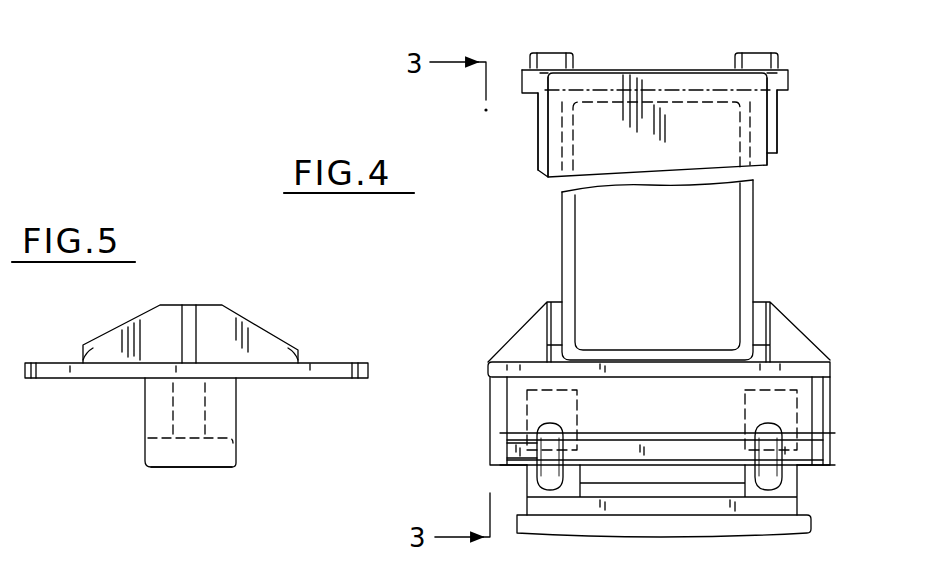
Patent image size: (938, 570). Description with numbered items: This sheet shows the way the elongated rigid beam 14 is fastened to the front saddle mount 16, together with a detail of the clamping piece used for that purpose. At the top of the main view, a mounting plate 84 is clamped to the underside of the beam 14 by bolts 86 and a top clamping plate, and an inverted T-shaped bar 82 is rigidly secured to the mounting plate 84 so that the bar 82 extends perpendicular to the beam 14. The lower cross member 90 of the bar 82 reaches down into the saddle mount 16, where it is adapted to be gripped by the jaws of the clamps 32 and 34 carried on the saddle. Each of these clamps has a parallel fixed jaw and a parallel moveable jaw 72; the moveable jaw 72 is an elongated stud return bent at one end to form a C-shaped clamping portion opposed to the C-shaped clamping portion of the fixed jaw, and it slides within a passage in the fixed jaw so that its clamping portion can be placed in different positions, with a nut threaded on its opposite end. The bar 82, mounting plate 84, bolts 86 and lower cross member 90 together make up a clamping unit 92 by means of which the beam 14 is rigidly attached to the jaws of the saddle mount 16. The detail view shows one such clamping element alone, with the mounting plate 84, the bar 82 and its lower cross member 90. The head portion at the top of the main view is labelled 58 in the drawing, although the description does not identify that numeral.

In FIG. 4, the beam 14 is at (755, 203).
In FIG. 4, the front saddle mount 16 is at (803, 490).
In FIG. 4, the clamp 32 is at (512, 486).
In FIG. 4, the clamp 34 is at (824, 468).
In FIG. 4, the cap member 58 is at (786, 72).
In FIG. 4, the moveable jaw 72 is at (752, 432).
In FIG. 4, the bar 82 is at (828, 383).
In FIG. 5, the bar 82 is at (238, 421).
In FIG. 4, the mounting plate 84 is at (783, 323).
In FIG. 5, the mounting plate 84 is at (262, 333).
In FIG. 4, the bolts 86 is at (537, 133).
In FIG. 4, the lower cross member 90 is at (510, 450).
In FIG. 5, the lower cross member 90 is at (198, 460).
In FIG. 4, the clamping unit 92 is at (470, 368).